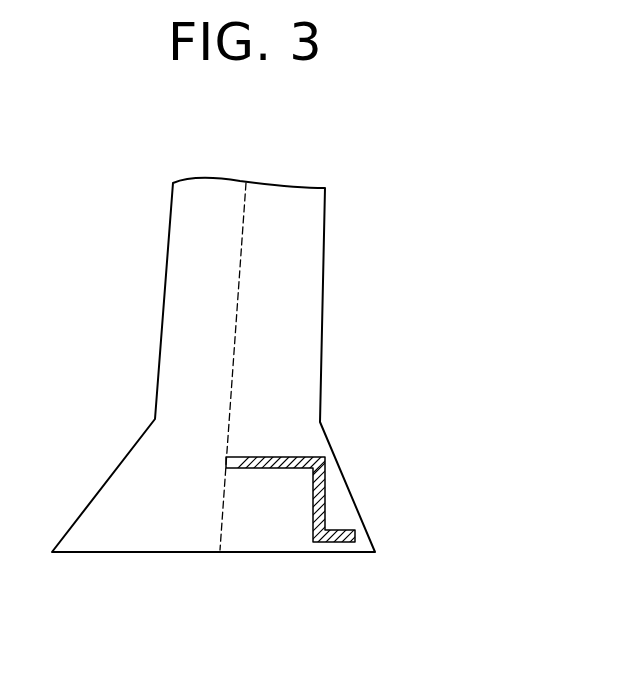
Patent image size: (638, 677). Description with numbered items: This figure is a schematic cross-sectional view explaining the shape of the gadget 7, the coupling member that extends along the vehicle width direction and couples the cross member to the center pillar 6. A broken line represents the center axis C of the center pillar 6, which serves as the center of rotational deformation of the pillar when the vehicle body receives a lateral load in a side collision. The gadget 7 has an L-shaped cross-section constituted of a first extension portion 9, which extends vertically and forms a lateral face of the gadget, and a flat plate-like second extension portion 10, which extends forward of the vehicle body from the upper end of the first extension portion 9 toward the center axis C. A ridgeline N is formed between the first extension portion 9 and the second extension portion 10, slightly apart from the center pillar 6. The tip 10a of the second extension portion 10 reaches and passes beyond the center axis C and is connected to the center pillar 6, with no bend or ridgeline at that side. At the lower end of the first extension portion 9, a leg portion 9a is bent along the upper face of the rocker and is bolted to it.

The center pillar 6 is at (302, 250).
The center axis C is at (237, 292).
The gadget (coupling member) 7 is at (304, 494).
The second extension portion 10 is at (273, 456).
The tip 10a is at (226, 462).
The first extension portion 9 is at (323, 505).
The leg portion 9a is at (350, 542).
The ridgeline N is at (327, 455).